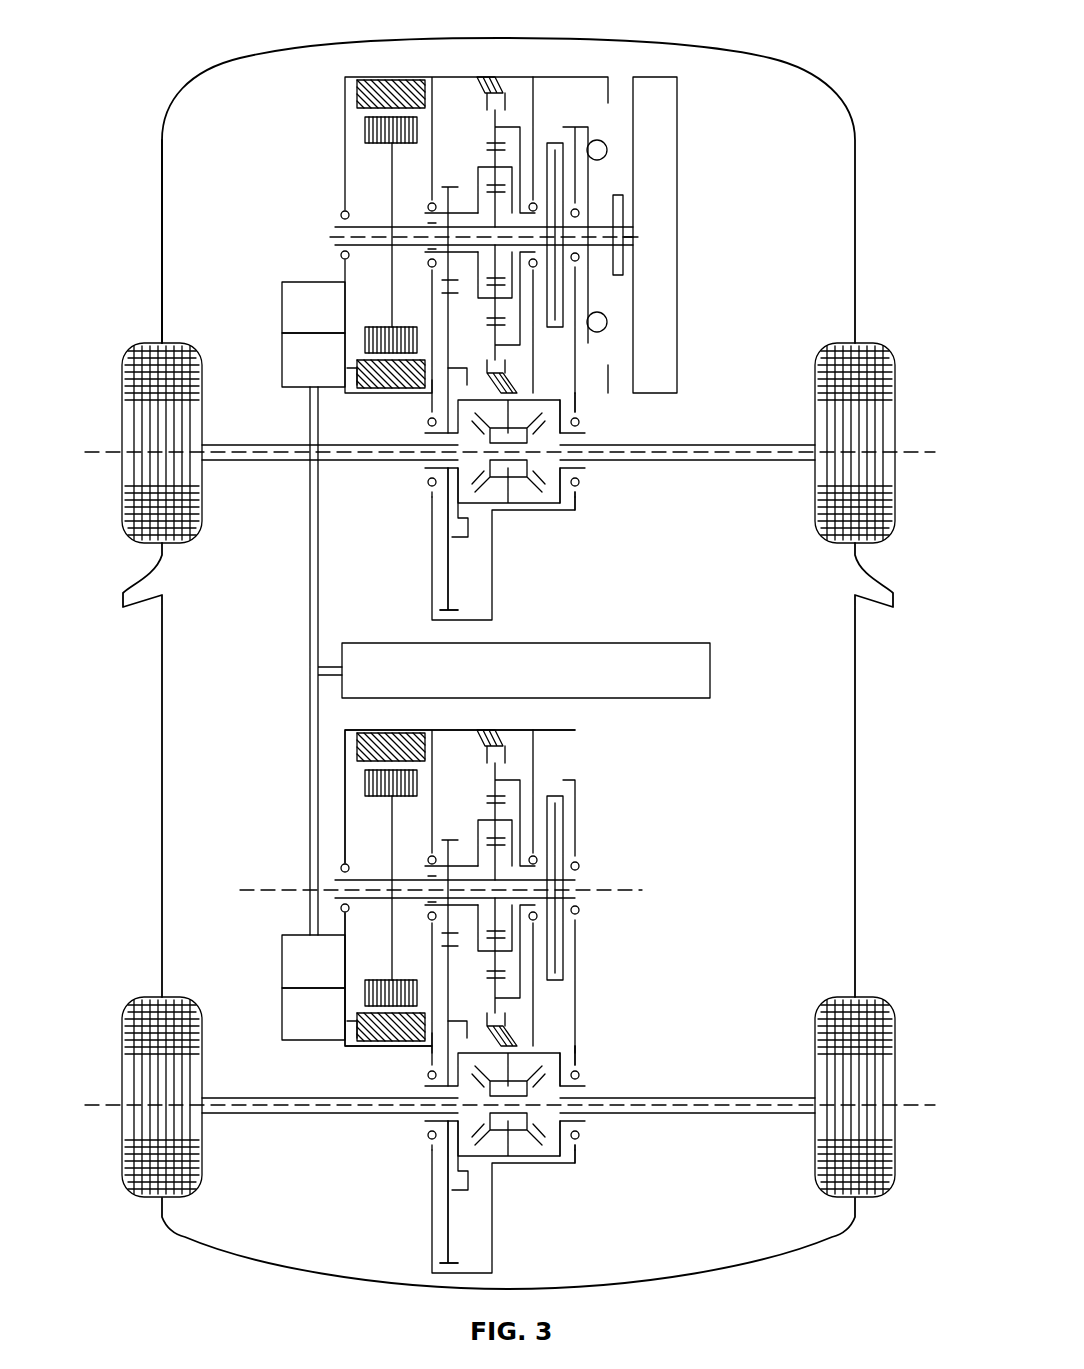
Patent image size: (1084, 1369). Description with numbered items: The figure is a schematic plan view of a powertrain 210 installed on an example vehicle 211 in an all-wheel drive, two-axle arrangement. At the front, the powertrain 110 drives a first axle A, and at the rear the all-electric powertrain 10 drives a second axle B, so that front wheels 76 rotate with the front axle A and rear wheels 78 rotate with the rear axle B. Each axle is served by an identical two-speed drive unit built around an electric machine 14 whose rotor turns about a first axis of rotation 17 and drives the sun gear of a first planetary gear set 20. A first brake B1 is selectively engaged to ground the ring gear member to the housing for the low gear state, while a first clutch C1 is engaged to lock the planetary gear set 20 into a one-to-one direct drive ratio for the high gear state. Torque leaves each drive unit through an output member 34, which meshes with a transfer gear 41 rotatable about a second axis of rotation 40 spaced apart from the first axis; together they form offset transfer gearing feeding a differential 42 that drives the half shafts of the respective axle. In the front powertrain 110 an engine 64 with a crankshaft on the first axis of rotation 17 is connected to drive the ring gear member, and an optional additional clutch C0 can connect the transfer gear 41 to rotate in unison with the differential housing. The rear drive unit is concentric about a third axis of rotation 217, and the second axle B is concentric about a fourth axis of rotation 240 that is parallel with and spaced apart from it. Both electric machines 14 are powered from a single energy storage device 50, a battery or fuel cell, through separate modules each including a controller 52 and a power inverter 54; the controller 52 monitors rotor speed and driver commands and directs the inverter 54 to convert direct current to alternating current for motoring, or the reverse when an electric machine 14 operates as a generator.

The powertrain 10 is at (638, 848).
The first electric machine 14 is at (356, 156).
The first axis of rotation 17 is at (342, 234).
The first planetary gear set 20 is at (478, 161).
The output member 34 is at (446, 200).
The second axis of rotation 40 is at (405, 455).
The transfer gear 41 is at (446, 564).
The differential 42 is at (570, 492).
The energy storage device 50 is at (668, 643).
The controller 52 is at (282, 305).
The power inverter 54 is at (282, 355).
The engine 64 is at (659, 76).
The front wheels 76 is at (177, 545).
The rear wheels 78 is at (177, 999).
The powertrain 110 is at (308, 203).
The powertrain 210 is at (707, 95).
The vehicle 211 is at (160, 158).
The third axis of rotation 217 is at (242, 882).
The fourth axis of rotation 240 is at (407, 1108).
The first axle A is at (260, 442).
The second axle B is at (260, 1097).
The first brake B1 is at (472, 95).
The first clutch C1 is at (552, 130).
The additional clutch C0 is at (485, 517).